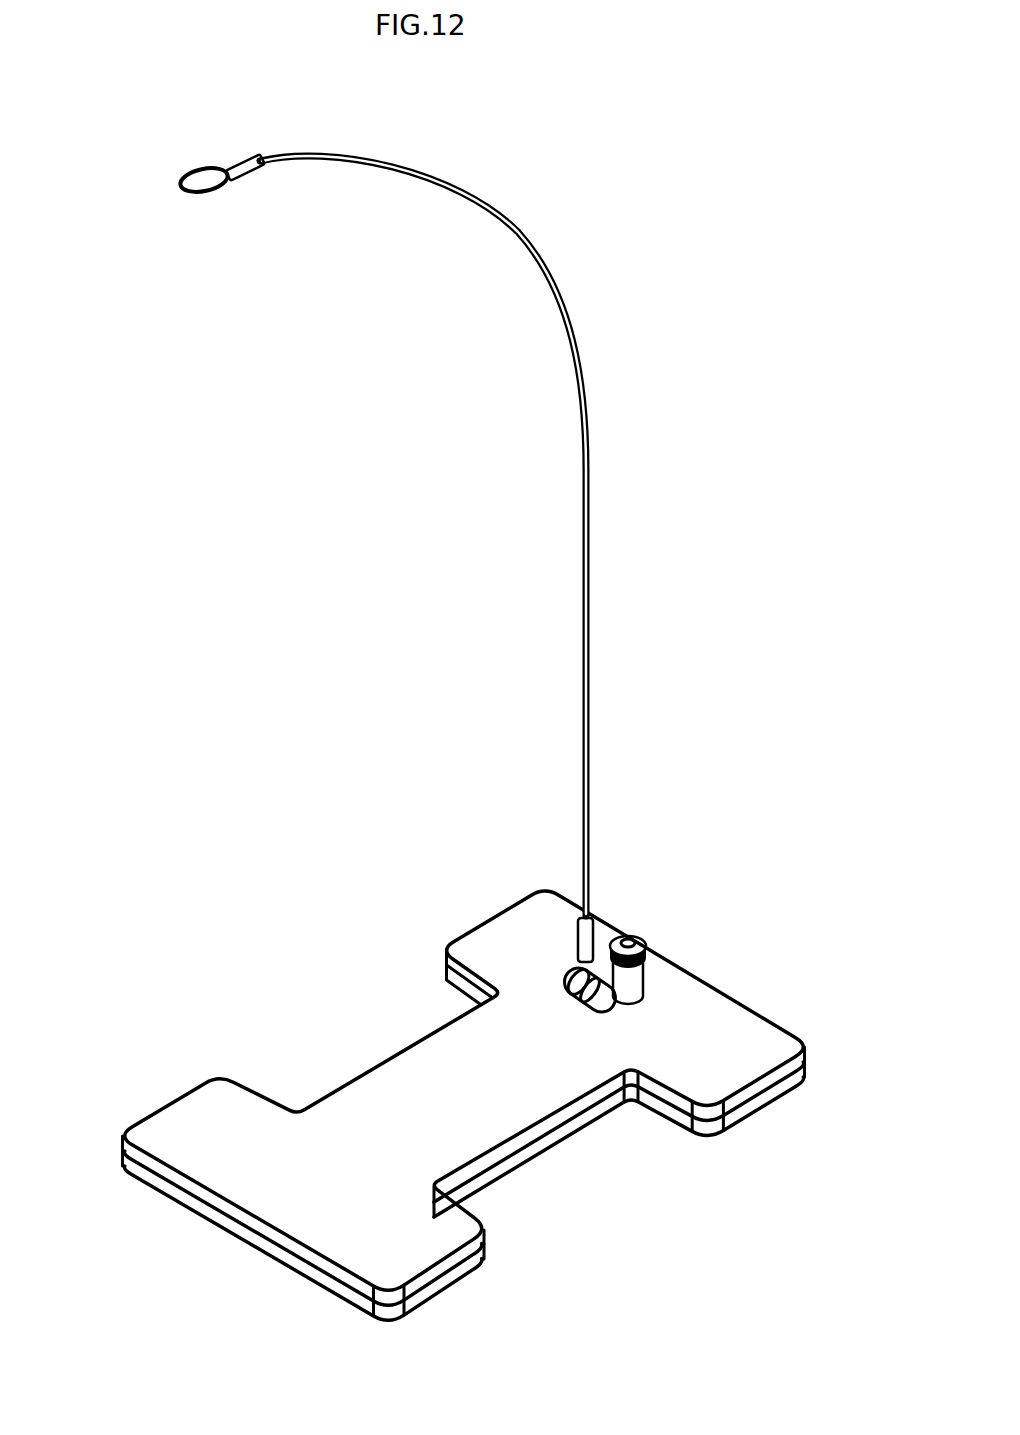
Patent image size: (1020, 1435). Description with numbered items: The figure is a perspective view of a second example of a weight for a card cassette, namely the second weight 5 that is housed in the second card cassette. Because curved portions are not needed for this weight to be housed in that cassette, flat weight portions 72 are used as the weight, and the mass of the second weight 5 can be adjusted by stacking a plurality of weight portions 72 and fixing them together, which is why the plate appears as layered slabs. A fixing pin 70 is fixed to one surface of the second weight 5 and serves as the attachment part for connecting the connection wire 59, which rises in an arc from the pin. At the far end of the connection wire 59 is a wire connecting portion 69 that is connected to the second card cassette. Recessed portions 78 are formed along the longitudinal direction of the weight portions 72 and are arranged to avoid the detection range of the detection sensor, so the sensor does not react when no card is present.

The second weight 5 is at (172, 940).
The connection wire 59 is at (588, 548).
The wire connecting portion 69 is at (205, 195).
The fixing pin 70 is at (628, 936).
The weight portion 72 is at (440, 1050).
The recessed portion 78 is at (555, 1130).